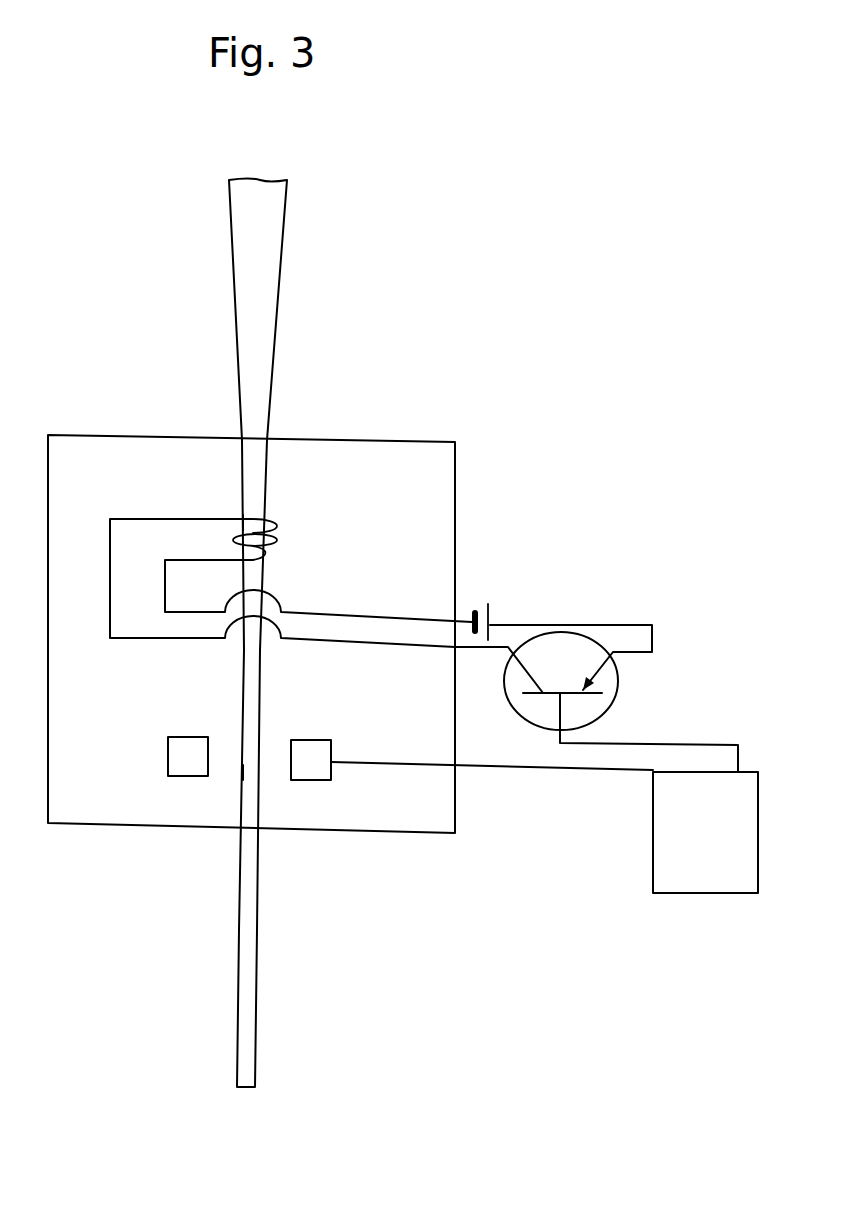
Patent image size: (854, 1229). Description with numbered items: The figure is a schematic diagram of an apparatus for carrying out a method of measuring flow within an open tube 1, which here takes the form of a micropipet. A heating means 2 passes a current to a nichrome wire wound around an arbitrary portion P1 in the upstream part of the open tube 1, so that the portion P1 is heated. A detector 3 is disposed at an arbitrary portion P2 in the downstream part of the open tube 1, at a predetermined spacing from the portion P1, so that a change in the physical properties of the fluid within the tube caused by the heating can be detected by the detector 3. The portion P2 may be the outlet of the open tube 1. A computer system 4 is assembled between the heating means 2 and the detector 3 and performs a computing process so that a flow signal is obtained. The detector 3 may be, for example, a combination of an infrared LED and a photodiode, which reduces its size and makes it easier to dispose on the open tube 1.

The open tube 1 is at (248, 898).
The heating means 2 is at (277, 526).
The detector 3 is at (188, 737).
The computer system 4 is at (705, 877).
The arbitrary portion in the upstream part P1 is at (243, 522).
The arbitrary portion in the downstream part P2 is at (250, 772).